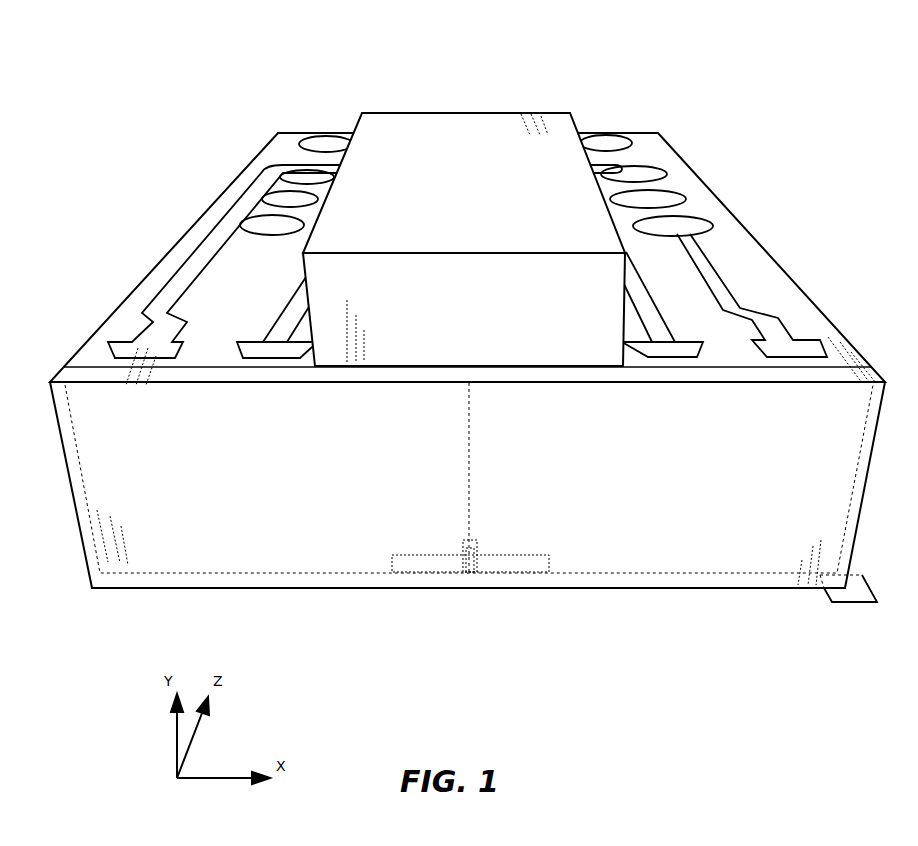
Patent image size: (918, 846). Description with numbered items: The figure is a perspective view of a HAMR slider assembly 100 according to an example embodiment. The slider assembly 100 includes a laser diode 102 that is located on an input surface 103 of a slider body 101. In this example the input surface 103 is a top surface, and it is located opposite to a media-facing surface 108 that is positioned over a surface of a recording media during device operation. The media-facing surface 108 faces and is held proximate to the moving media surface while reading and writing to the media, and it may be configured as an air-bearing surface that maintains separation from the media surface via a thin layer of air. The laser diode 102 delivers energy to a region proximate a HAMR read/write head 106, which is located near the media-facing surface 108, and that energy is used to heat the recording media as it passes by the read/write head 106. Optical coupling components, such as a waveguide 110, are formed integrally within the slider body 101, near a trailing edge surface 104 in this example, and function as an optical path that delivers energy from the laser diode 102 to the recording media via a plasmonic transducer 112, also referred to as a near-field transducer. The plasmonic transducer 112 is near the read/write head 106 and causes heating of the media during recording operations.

The HAMR slider assembly 100 is at (457, 371).
The slider body 101 is at (252, 162).
The laser diode 102 is at (380, 111).
The input surface 103 is at (122, 325).
The trailing edge surface 104 is at (157, 560).
The HAMR read/write head 106 is at (475, 572).
The media-facing surface 108 is at (867, 607).
The waveguide 110 is at (469, 457).
The plasmonic transducer 112 is at (468, 573).